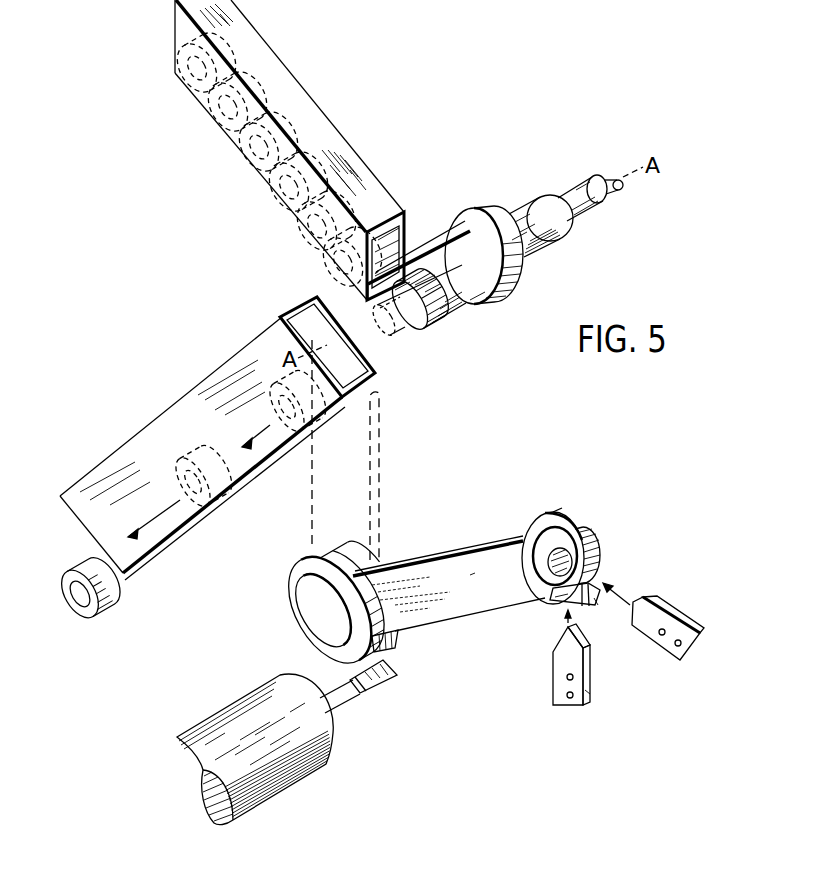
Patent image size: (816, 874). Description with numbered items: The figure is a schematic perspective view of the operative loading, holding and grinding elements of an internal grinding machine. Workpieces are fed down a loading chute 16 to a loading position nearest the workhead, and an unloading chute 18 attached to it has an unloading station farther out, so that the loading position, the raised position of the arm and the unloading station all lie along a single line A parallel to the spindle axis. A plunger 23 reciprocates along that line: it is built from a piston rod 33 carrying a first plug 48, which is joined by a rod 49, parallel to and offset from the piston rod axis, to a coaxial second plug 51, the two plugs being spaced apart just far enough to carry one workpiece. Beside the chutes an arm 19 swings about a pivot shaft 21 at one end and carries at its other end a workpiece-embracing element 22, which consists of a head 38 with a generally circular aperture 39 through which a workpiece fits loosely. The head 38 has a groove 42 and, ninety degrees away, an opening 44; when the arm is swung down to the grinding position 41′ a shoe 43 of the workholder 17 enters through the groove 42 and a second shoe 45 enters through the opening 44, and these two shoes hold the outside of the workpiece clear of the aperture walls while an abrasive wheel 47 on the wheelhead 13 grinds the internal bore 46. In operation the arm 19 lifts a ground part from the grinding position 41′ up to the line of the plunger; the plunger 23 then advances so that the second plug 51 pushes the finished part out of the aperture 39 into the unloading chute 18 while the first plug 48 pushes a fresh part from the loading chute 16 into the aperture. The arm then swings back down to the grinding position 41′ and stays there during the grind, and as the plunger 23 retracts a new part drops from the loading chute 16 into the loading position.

The loading chute 16 is at (315, 118).
The unloading chute 18 is at (130, 455).
The second plug 51 is at (397, 333).
The rod 49 is at (425, 260).
The plunger 23 is at (478, 211).
The first plug 48 is at (478, 283).
The piston rod 33 is at (568, 198).
The pivot shaft 21 is at (308, 618).
The arm 19 is at (443, 577).
The internal bore 46 is at (493, 580).
The workpiece-embracing element 22 is at (532, 532).
The aperture 39 is at (550, 530).
The head 38 is at (582, 533).
The grinding position 41′ is at (600, 548).
The groove 42 is at (570, 598).
The opening 44 is at (602, 602).
The shoe 43 is at (563, 662).
The shoe 45 is at (657, 617).
The workholder 17 is at (667, 637).
The wheelhead 13 is at (223, 733).
The abrasive wheel 47 is at (378, 678).